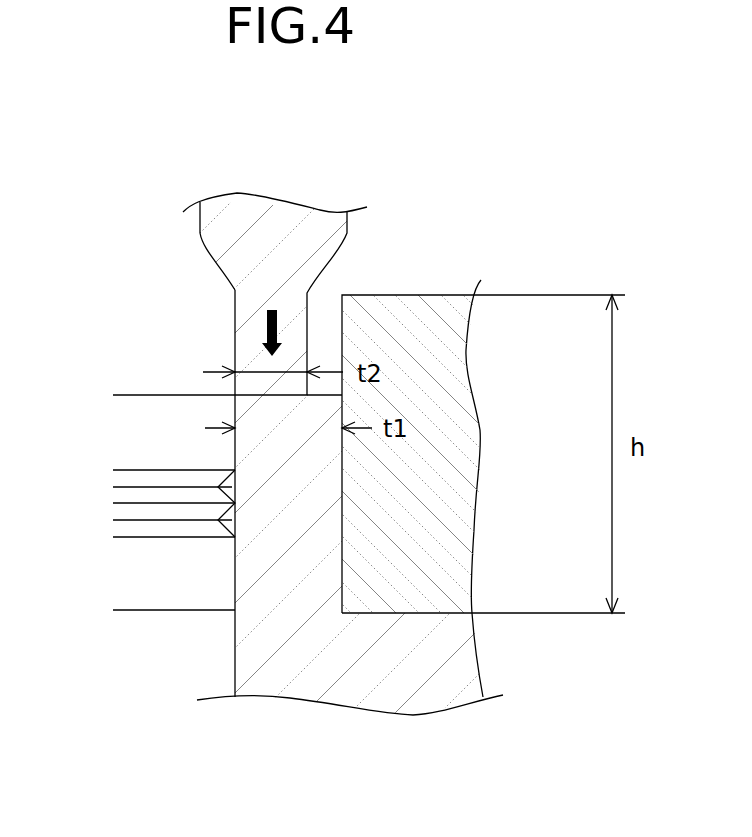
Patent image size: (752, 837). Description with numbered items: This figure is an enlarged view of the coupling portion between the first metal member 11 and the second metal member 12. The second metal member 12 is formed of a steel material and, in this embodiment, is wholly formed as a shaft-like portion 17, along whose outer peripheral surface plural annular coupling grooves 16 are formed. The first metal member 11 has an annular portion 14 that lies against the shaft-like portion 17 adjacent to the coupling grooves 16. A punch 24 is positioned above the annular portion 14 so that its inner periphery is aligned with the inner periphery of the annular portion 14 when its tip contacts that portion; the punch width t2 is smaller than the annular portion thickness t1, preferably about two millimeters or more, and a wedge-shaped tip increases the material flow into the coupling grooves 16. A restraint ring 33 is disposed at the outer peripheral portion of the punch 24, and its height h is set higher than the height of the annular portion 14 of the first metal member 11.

The first metal member 11 is at (262, 665).
The second metal member 12 is at (147, 413).
The annular portion 14 is at (325, 488).
The coupling groove 16 is at (218, 487).
The shaft-like portion 17 is at (233, 572).
The punch 24 is at (318, 238).
The restraint ring 33 is at (438, 528).